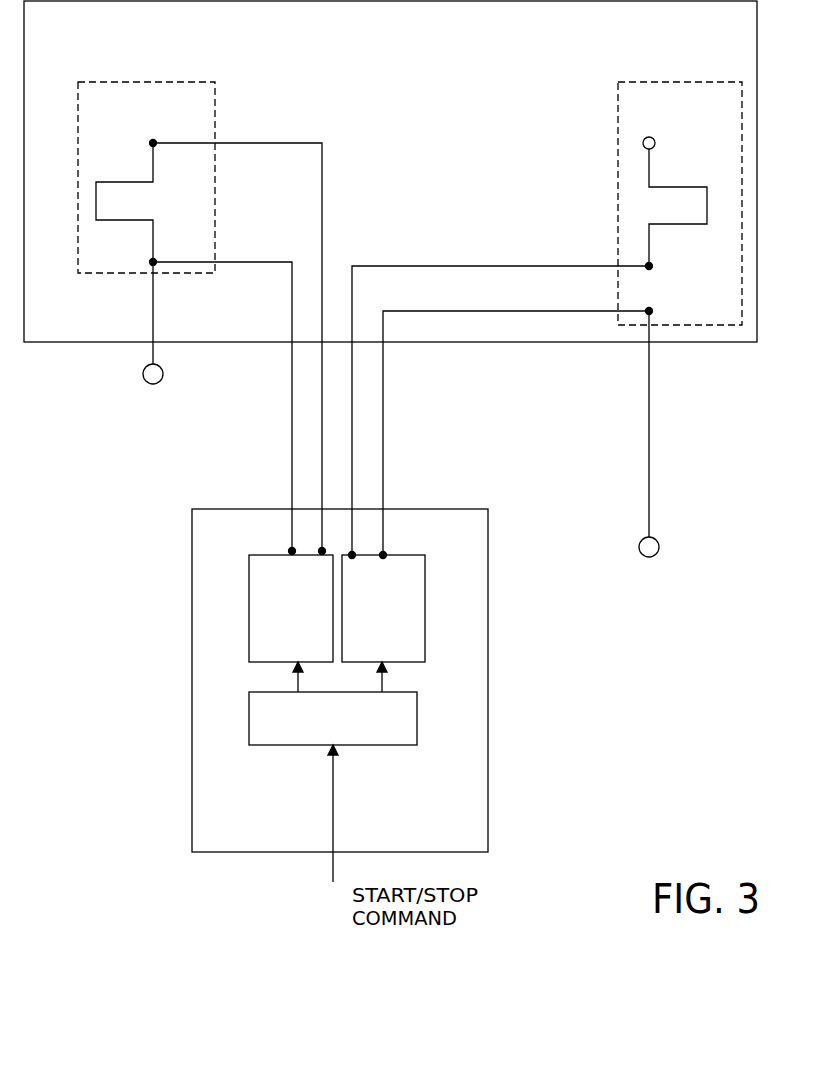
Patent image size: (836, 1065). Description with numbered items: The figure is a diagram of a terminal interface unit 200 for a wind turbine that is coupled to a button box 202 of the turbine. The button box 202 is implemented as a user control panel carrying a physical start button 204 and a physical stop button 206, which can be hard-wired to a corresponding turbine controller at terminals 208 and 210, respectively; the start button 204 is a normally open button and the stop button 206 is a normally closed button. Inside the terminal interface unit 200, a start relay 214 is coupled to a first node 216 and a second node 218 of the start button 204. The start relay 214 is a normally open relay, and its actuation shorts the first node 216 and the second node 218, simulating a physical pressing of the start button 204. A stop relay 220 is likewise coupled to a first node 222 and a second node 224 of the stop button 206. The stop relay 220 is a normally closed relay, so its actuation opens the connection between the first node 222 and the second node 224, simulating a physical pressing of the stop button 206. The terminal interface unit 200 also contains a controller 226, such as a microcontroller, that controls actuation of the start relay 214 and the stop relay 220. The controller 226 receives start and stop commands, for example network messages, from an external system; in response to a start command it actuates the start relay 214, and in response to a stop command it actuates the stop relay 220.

The terminal interface unit 200 is at (465, 842).
The button box 202 is at (503, 36).
The start button 204 is at (205, 118).
The stop button 206 is at (732, 114).
The terminal 208 is at (163, 372).
The terminal 210 is at (643, 538).
The start relay 214 is at (308, 656).
The first node 216 is at (150, 146).
The second node 218 is at (150, 262).
The stop relay 220 is at (400, 656).
The first node 222 is at (652, 266).
The second node 224 is at (652, 311).
The controller 226 is at (408, 744).